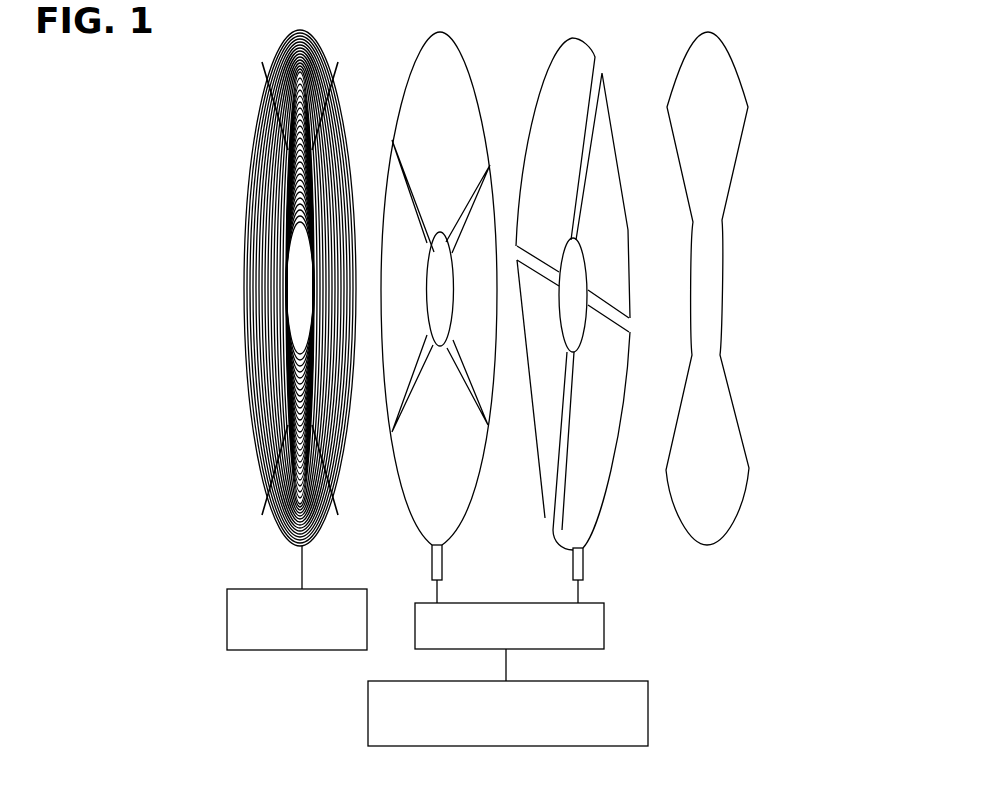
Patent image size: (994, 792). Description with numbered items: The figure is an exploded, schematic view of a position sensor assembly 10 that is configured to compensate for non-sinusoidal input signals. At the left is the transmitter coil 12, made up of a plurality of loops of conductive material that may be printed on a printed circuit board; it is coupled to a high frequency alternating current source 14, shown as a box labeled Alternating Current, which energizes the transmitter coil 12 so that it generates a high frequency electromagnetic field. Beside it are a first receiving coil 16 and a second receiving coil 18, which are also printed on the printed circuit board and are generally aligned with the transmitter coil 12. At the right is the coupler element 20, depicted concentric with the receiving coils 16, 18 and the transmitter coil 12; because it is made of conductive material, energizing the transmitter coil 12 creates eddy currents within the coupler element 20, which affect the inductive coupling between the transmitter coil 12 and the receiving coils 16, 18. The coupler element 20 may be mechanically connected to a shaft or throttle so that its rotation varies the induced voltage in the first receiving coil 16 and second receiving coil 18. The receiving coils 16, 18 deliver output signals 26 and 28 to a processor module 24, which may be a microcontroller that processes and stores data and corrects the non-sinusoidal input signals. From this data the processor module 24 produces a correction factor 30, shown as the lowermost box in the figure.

The position sensor assembly 10 is at (775, 52).
The transmitter coil 12 is at (248, 152).
The high frequency alternating current source 14 is at (226, 607).
The first receiving coil 16 is at (441, 301).
The second receiving coil 18 is at (589, 320).
The coupler element 20 is at (724, 232).
The processor module 24 is at (608, 622).
The output signal 26 is at (442, 571).
The output signal 28 is at (583, 572).
The correction factor 30 is at (650, 712).